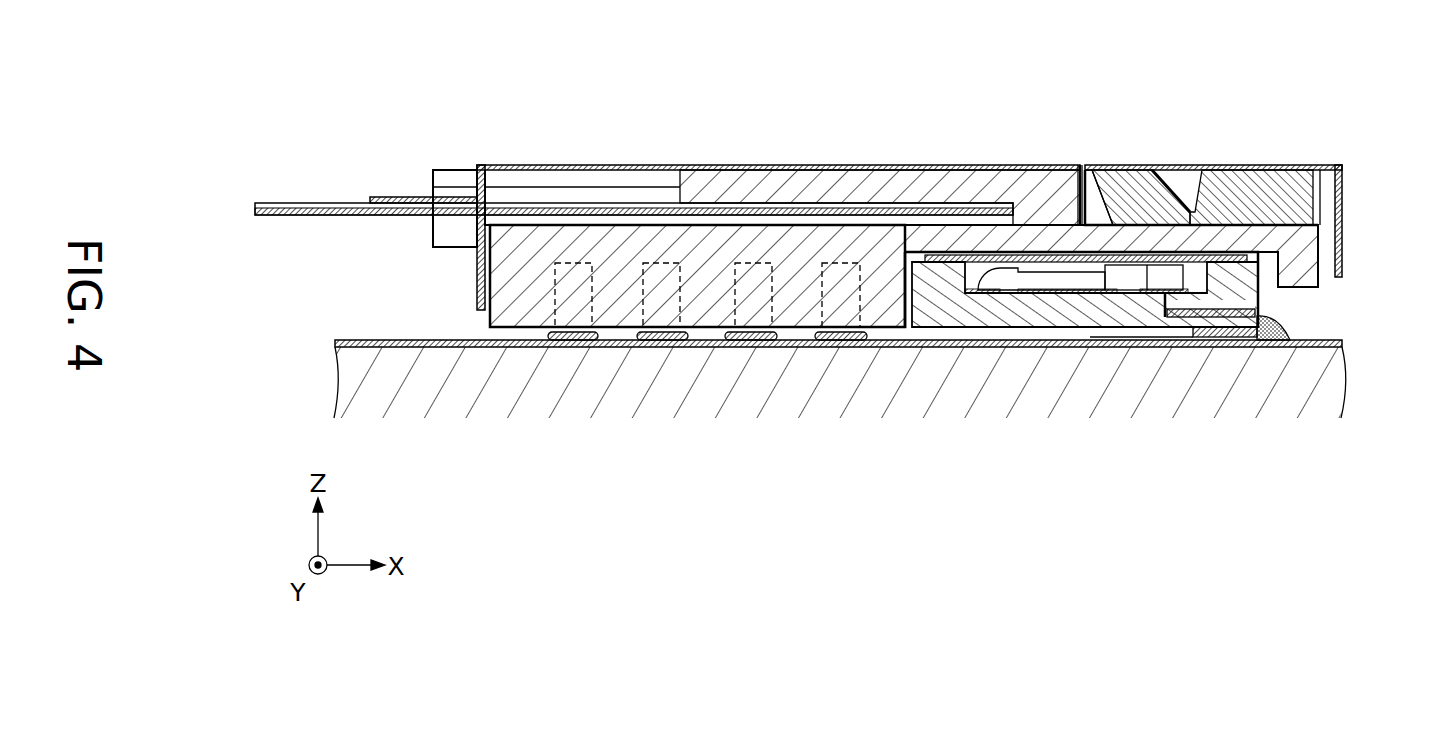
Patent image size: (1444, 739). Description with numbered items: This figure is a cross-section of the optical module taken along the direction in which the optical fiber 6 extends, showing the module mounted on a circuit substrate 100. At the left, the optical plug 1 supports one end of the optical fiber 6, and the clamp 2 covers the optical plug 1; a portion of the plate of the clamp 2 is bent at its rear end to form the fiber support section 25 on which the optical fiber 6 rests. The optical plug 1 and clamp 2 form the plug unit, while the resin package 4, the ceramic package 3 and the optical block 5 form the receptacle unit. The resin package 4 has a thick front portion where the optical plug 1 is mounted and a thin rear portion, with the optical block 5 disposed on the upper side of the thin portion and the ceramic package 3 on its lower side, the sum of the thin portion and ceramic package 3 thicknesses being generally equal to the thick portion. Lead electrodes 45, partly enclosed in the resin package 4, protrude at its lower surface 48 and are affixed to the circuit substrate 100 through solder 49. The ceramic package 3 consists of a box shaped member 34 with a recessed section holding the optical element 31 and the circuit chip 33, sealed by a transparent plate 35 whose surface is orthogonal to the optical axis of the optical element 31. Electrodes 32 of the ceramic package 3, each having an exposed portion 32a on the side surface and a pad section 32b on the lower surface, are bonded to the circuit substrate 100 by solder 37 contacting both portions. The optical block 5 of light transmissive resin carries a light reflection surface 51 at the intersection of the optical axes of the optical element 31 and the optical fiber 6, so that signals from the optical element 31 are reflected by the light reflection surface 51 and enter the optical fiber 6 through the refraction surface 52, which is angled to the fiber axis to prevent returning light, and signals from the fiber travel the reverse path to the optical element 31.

The optical plug 1 is at (867, 165).
The clamp 2 is at (1340, 167).
The ceramic package 3 is at (1142, 297).
The resin package 4 is at (567, 225).
The optical block 5 is at (1270, 195).
The optical fiber 6 is at (292, 203).
The fiber support section 25 is at (403, 197).
The optical element 31 is at (1150, 277).
The electrodes 32 is at (1218, 393).
The exposed portion 32a is at (1277, 343).
The pad section 32b is at (1188, 333).
The circuit chip 33 is at (1057, 277).
The box shaped member 34 is at (1088, 320).
The transparent plate 35 is at (988, 252).
The solder 37 is at (1285, 316).
The lead electrodes 45 is at (578, 263).
The lower surface 48 is at (493, 330).
The solder 49 is at (660, 341).
The light reflection surface 51 is at (1170, 175).
The refraction surface 52 is at (1100, 200).
The circuit substrate 100 is at (1313, 373).